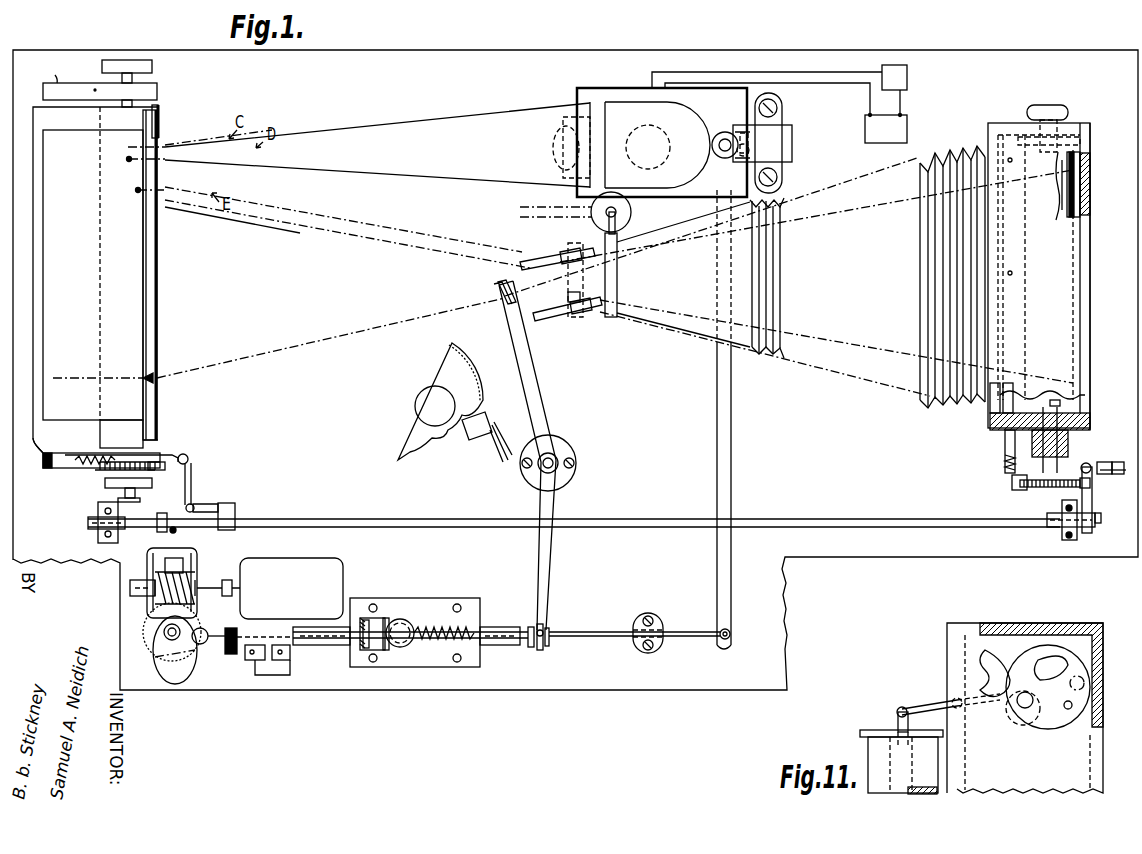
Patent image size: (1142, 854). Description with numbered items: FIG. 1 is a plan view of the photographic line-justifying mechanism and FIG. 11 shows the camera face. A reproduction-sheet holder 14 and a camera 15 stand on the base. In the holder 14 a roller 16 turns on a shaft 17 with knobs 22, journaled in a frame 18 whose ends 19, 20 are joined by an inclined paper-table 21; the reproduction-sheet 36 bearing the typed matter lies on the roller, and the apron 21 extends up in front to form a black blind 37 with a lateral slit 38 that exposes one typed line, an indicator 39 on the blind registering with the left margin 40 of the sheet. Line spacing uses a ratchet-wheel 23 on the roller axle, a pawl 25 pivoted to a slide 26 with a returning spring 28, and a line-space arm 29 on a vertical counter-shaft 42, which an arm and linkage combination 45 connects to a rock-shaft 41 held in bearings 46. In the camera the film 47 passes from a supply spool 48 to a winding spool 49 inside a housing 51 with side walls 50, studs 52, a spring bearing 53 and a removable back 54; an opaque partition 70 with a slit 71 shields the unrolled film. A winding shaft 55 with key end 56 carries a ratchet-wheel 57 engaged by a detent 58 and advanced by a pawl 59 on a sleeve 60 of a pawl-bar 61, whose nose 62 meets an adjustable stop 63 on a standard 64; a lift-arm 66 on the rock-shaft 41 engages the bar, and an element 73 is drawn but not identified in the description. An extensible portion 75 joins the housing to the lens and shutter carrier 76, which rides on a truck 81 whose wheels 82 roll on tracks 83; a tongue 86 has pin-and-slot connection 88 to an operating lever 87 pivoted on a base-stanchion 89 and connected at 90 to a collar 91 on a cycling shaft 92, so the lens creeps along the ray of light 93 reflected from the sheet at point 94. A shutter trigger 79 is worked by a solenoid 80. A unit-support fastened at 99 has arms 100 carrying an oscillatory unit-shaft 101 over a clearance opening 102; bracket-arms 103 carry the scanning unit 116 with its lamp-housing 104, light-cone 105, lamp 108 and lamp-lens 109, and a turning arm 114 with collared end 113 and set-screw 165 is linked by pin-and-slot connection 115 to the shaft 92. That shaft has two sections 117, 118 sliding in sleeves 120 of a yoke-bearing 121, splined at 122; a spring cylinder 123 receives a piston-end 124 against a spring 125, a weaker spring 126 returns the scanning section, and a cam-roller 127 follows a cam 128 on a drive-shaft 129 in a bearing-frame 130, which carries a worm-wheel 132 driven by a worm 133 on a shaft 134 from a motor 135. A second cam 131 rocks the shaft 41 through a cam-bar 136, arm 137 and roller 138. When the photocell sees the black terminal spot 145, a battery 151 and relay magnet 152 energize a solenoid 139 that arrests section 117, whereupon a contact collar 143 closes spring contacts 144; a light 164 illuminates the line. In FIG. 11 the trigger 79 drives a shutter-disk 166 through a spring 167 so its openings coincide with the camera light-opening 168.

In FIG. 1, the reproduction-sheet holder 14 is at (167, 113).
In FIG. 1, the camera 15 is at (969, 129).
In FIG. 1, the roller 16 is at (100, 118).
In FIG. 1, the shaft 17 is at (135, 77).
In FIG. 1, the frame 18 is at (50, 70).
In FIG. 1, the frame end 19 is at (55, 466).
In FIG. 1, the frame end 20 is at (43, 90).
In FIG. 1, the inclined paper-table 21 is at (52, 439).
In FIG. 1, the knobs 22 is at (102, 64).
In FIG. 1, the ratchet-wheel 23 is at (110, 470).
In FIG. 1, the pawl 25 is at (165, 470).
In FIG. 1, the slide 26 is at (170, 455).
In FIG. 1, the returning spring 28 is at (80, 468).
In FIG. 1, the line-space arm 29 is at (189, 458).
In FIG. 1, the reproduction-sheet 36 is at (93, 275).
In FIG. 1, the blind 37 is at (150, 328).
In FIG. 1, the lateral slit 38 is at (158, 410).
In FIG. 1, the indicator 39 is at (140, 386).
In FIG. 1, the left margin 40 is at (66, 378).
In FIG. 1, the rock-shaft 41 is at (620, 520).
In FIG. 1, the vertical counter-shaft 42 is at (193, 505).
In FIG. 1, the arm and linkage combination 45 is at (236, 505).
In FIG. 1, the bearings 46 is at (98, 538).
In FIG. 1, the photographic negative 47 is at (1090, 193).
In FIG. 1, the supply spool 48 is at (1070, 405).
In FIG. 1, the winding spool 49 is at (1025, 350).
In FIG. 1, the side walls 50 is at (997, 432).
In FIG. 1, the housing 51 is at (1039, 267).
In FIG. 1, the studs 52 is at (1028, 136).
In FIG. 1, the spring bearing 53 is at (1065, 110).
In FIG. 1, the removable back 54 is at (1090, 360).
In FIG. 1, the winding shaft 55 is at (1068, 445).
In FIG. 1, the key end 56 is at (1059, 390).
In FIG. 1, the ratchet-wheel 57 is at (1050, 487).
In FIG. 1, the detent 58 is at (1012, 483).
In FIG. 1, the pawl 59 is at (1092, 487).
In FIG. 1, the sleeve 60 is at (1090, 466).
In FIG. 1, the pawl-bar 61 is at (1078, 473).
In FIG. 1, the nose 62 is at (1108, 466).
In FIG. 1, the stop 63 is at (1115, 475).
In FIG. 1, the standard 64 is at (1122, 467).
In FIG. 1, the lift-arm 66 is at (1088, 530).
In FIG. 1, the opaque light-screen 70 is at (1058, 165).
In FIG. 1, the slit 71 is at (1060, 192).
In FIG. 1, the stop 73 is at (1015, 395).
In FIG. 1, the extensible portion 75 is at (930, 398).
In FIG. 1, the lens and shutter carrier 76 is at (615, 317).
In FIG. 11, the lens and shutter carrier 76 is at (950, 637).
In FIG. 1, the shutter trigger 79 is at (606, 236).
In FIG. 11, the shutter trigger 79 is at (915, 705).
In FIG. 1, the solenoid 80 is at (632, 212).
In FIG. 11, the solenoid 80 is at (875, 730).
In FIG. 1, the truck 81 is at (576, 269).
In FIG. 1, the wheels 82 is at (565, 250).
In FIG. 1, the parallel tracks 83 is at (548, 262).
In FIG. 1, the tongue 86 is at (568, 300).
In FIG. 1, the operating lever 87 is at (546, 414).
In FIG. 1, the pin-and-slot connection 88 is at (505, 303).
In FIG. 1, the base-stanchion 89 is at (562, 458).
In FIG. 1, the pin-and-slot connection 90 is at (538, 627).
In FIG. 1, the collar 91 is at (549, 632).
In FIG. 1, the cycling shaft 92 is at (611, 626).
In FIG. 1, the ray of light 93 is at (367, 329).
In FIG. 1, the point 94 is at (154, 377).
In FIG. 1, the fastening 99 is at (778, 106).
In FIG. 1, the extended arms 100 is at (792, 143).
In FIG. 1, the oscillatory unit-shaft 101 is at (717, 155).
In FIG. 1, the clearance opening 102 is at (577, 96).
In FIG. 1, the sleeved bracket-arms 103 is at (748, 138).
In FIG. 1, the lamp-housing 104 is at (650, 145).
In FIG. 1, the light-cone 105 is at (377, 145).
In FIG. 1, the lamp 108 is at (662, 140).
In FIG. 1, the lamp-lens 109 is at (553, 146).
In FIG. 1, the collared end 113 is at (731, 132).
In FIG. 1, the unit-shaft-turning arm 114 is at (725, 455).
In FIG. 1, the pin-and-slot connection 115 is at (731, 633).
In FIG. 1, the photoelectric unit 116 is at (500, 111).
In FIG. 1, the scanning shaft-section 117 is at (678, 633).
In FIG. 1, the main cycling-shaft section 118 is at (260, 655).
In FIG. 1, the sleeves 120 is at (332, 645).
In FIG. 1, the yoke-bearing 121 is at (398, 598).
In FIG. 1, the splines 122 is at (320, 640).
In FIG. 1, the spring cylinder 123 is at (405, 620).
In FIG. 1, the piston-end 124 is at (368, 650).
In FIG. 1, the spring 125 is at (384, 650).
In FIG. 1, the second compression spring 126 is at (422, 628).
In FIG. 1, the cam-roller 127 is at (205, 628).
In FIG. 1, the cam 128 is at (204, 668).
In FIG. 1, the drive-shaft 129 is at (143, 630).
In FIG. 1, the bearing-frame 130 is at (152, 550).
In FIG. 1, the cam 131 is at (176, 644).
In FIG. 1, the worm-wheel 132 is at (153, 645).
In FIG. 1, the worm 133 is at (150, 575).
In FIG. 1, the shaft 134 is at (205, 585).
In FIG. 1, the motor 135 is at (291, 588).
In FIG. 1, the cam-bar 136 is at (176, 532).
In FIG. 1, the arm 137 is at (166, 513).
In FIG. 1, the roller 138 is at (152, 600).
In FIG. 1, the solenoid 139 is at (418, 640).
In FIG. 1, the contact collar 143 is at (225, 645).
In FIG. 1, the spring contacts 144 is at (267, 663).
In FIG. 1, the black terminal spot 145 is at (127, 158).
In FIG. 1, the battery 151 is at (907, 72).
In FIG. 1, the sensitive relay magnet 152 is at (886, 129).
In FIG. 1, the light 164 is at (436, 388).
In FIG. 1, the set-screw 165 is at (754, 154).
In FIG. 11, the shutter-disk 166 is at (1047, 715).
In FIG. 11, the spring 167 is at (1085, 635).
In FIG. 11, the light-opening 168 is at (1018, 708).